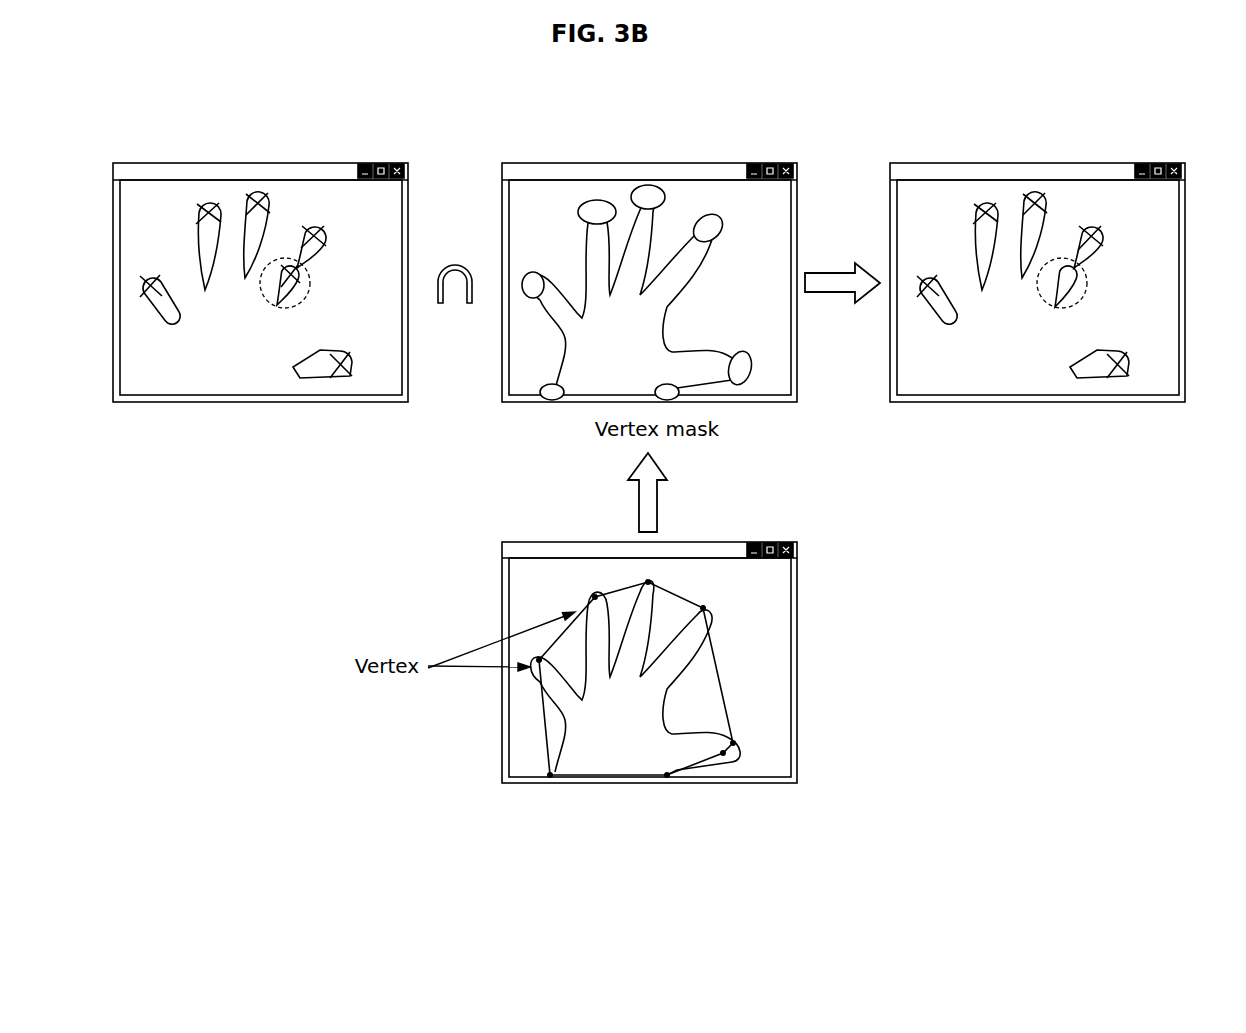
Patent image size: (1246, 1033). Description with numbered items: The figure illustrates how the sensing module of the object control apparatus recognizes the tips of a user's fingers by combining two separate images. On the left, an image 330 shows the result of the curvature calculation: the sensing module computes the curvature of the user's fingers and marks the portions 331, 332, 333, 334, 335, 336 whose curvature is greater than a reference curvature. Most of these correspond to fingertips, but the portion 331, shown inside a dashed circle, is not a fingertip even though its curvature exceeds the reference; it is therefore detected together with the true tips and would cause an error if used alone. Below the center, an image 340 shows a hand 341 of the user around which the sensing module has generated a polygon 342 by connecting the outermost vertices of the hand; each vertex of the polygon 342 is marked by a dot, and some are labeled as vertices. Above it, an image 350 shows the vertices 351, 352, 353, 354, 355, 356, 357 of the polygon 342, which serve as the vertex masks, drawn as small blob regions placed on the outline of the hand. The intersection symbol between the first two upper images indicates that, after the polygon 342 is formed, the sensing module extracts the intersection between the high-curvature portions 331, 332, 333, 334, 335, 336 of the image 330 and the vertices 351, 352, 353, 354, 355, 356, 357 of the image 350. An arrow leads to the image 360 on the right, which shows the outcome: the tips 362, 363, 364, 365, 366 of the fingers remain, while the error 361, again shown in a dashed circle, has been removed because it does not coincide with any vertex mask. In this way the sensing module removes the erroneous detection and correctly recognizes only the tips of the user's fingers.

The image 330 is at (258, 163).
The portion 331 is at (270, 302).
The portion 332 is at (148, 298).
The portion 333 is at (198, 213).
The portion 334 is at (258, 194).
The portion 335 is at (326, 234).
The portion 336 is at (328, 378).
The image 340 is at (707, 542).
The hand 341 is at (613, 723).
The polygon 342 is at (722, 683).
The image 350 is at (647, 164).
The vertex 351 is at (533, 275).
The vertex 352 is at (597, 205).
The vertex 353 is at (652, 190).
The vertex 354 is at (712, 228).
The vertex 355 is at (745, 367).
The vertex 356 is at (668, 392).
The vertex 357 is at (551, 392).
The image 360 is at (1035, 163).
The error 361 is at (1047, 302).
The tip 362 is at (925, 298).
The tip 363 is at (975, 213).
The tip 364 is at (1036, 194).
The tip 365 is at (1103, 234).
The tip 366 is at (1105, 378).